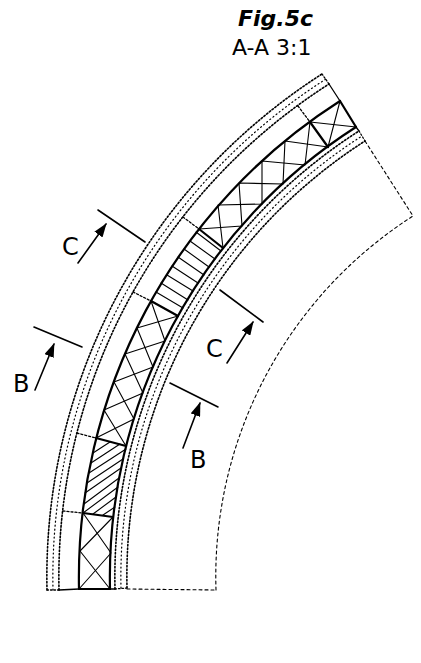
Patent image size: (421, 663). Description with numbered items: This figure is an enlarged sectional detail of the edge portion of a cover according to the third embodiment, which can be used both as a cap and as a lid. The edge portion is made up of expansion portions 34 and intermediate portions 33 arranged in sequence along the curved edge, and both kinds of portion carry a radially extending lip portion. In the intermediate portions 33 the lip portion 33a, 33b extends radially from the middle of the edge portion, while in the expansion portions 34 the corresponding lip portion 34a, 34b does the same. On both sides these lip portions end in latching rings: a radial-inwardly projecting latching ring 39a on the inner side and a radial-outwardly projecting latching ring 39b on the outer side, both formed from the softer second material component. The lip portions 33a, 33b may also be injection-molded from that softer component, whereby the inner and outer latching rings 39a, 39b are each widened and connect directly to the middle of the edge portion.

The intermediate portion 33 is at (350, 108).
The lip portion 33a is at (356, 126).
The lip portion 33b is at (334, 93).
The expansion portion 34 is at (250, 198).
The lip portion 34a is at (273, 230).
The lip portion 34b is at (221, 168).
The radial-inwardly projecting latching ring 39a is at (364, 141).
The radial-outwardly projecting latching ring 39b is at (327, 76).